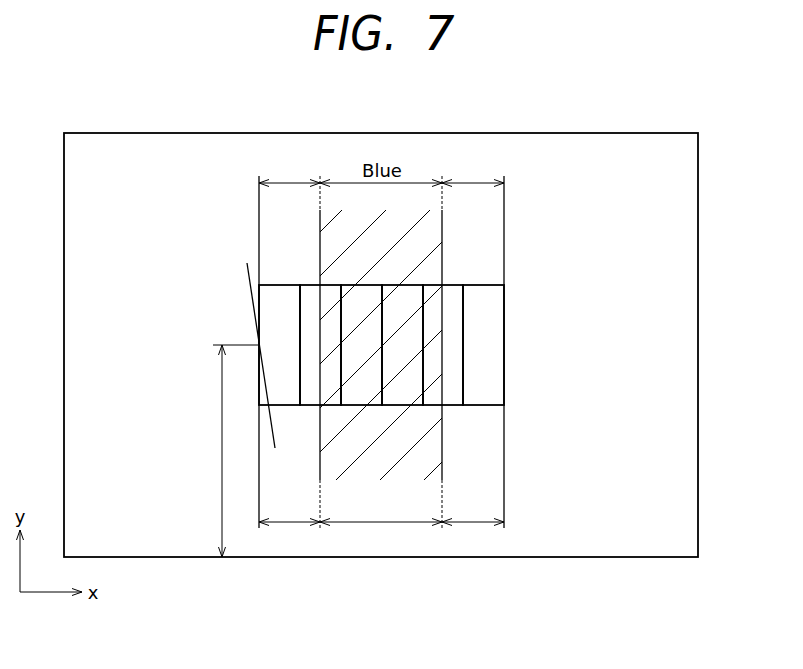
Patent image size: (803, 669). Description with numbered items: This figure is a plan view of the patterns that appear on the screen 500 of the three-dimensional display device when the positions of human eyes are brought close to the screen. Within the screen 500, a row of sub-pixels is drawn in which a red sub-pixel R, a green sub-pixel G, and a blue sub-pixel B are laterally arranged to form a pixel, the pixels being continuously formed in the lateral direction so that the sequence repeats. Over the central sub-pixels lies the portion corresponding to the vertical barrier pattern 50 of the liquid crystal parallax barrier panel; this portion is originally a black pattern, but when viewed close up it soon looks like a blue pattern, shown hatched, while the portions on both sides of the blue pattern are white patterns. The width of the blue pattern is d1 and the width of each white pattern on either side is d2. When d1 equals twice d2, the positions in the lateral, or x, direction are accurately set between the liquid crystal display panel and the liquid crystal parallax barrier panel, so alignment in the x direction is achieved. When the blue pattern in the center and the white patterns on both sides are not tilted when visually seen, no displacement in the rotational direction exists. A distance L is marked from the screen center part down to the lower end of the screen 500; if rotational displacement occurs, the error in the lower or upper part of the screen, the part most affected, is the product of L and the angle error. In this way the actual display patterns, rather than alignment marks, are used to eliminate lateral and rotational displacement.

The screen 500 is at (699, 210).
The barrier pattern 50 is at (408, 252).
The red sub-pixel R is at (341, 345).
The green sub-pixel G is at (381, 345).
The blue sub-pixel B is at (422, 345).
The sub-pixel width W is at (381, 173).
The distance L is at (229, 451).
The width of the blue pattern d1 is at (381, 512).
The width of the white patterns d2 is at (381, 512).